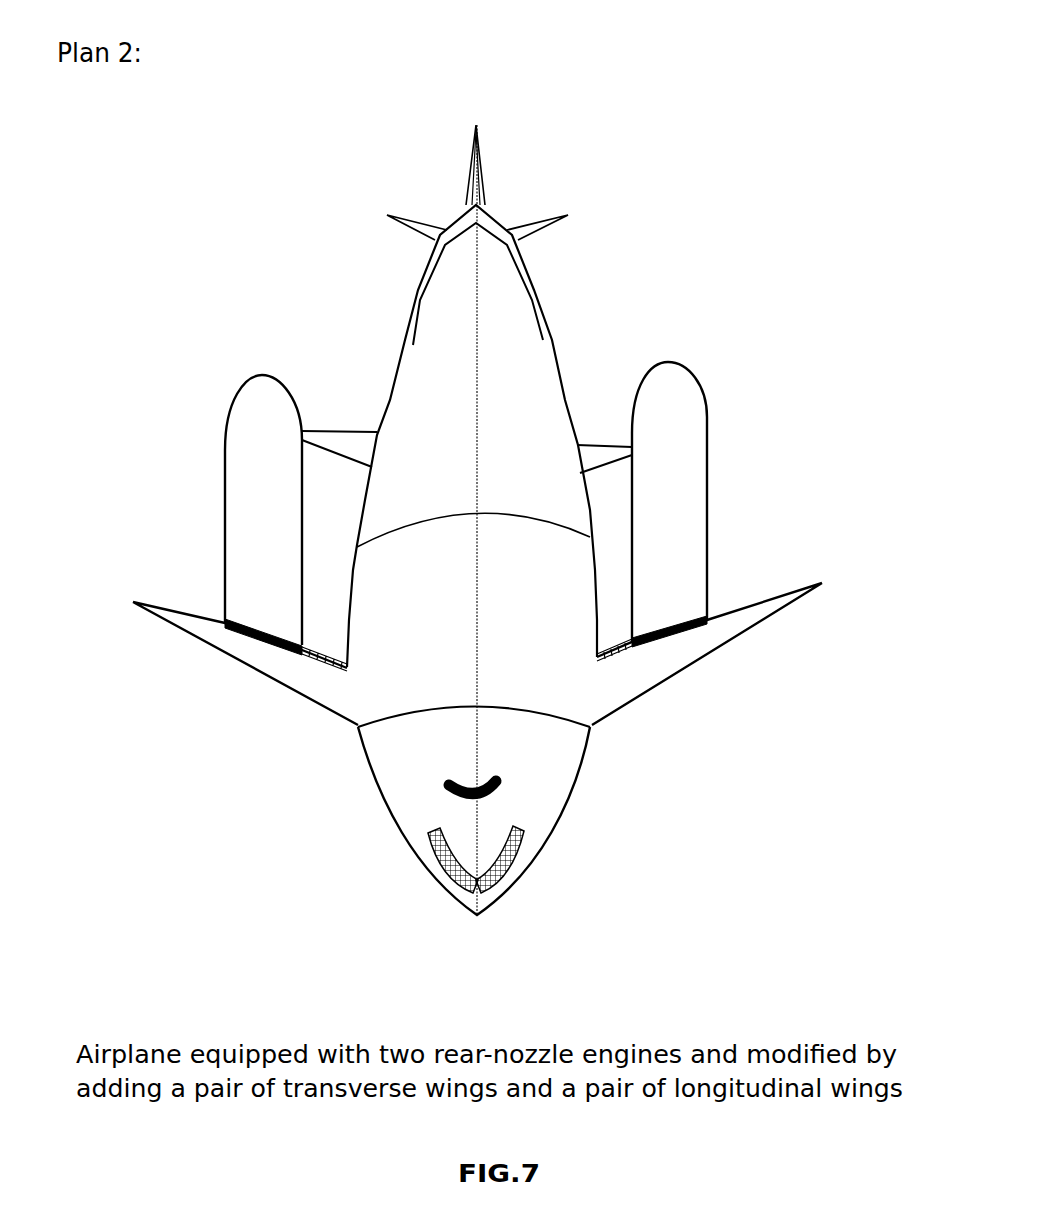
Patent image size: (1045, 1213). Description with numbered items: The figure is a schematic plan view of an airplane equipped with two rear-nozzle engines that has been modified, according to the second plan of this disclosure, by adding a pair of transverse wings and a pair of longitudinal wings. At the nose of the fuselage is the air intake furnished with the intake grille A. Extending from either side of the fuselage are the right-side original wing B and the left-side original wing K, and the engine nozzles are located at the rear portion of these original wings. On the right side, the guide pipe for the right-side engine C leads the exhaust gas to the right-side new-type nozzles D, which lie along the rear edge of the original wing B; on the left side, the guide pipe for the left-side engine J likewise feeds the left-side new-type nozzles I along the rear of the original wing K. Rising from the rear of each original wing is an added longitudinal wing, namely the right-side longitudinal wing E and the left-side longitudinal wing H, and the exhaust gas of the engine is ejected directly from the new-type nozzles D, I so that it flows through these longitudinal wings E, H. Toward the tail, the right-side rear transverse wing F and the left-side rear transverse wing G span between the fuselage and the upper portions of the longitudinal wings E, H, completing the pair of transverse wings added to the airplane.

The air intake furnished with the intake grille A is at (431, 871).
The right-side original wing B is at (213, 657).
The guide pipe for the right-side engine C is at (327, 678).
The right-side new-type nozzles D is at (244, 614).
The right-side longitudinal wing E is at (234, 510).
The right-side rear transverse wing F is at (315, 412).
The left-side rear transverse wing G is at (598, 436).
The left-side longitudinal wing H is at (685, 494).
The left-side new-type nozzles I is at (693, 611).
The guide pipe for the left-side engine J is at (610, 677).
The left-side original wing K is at (671, 671).